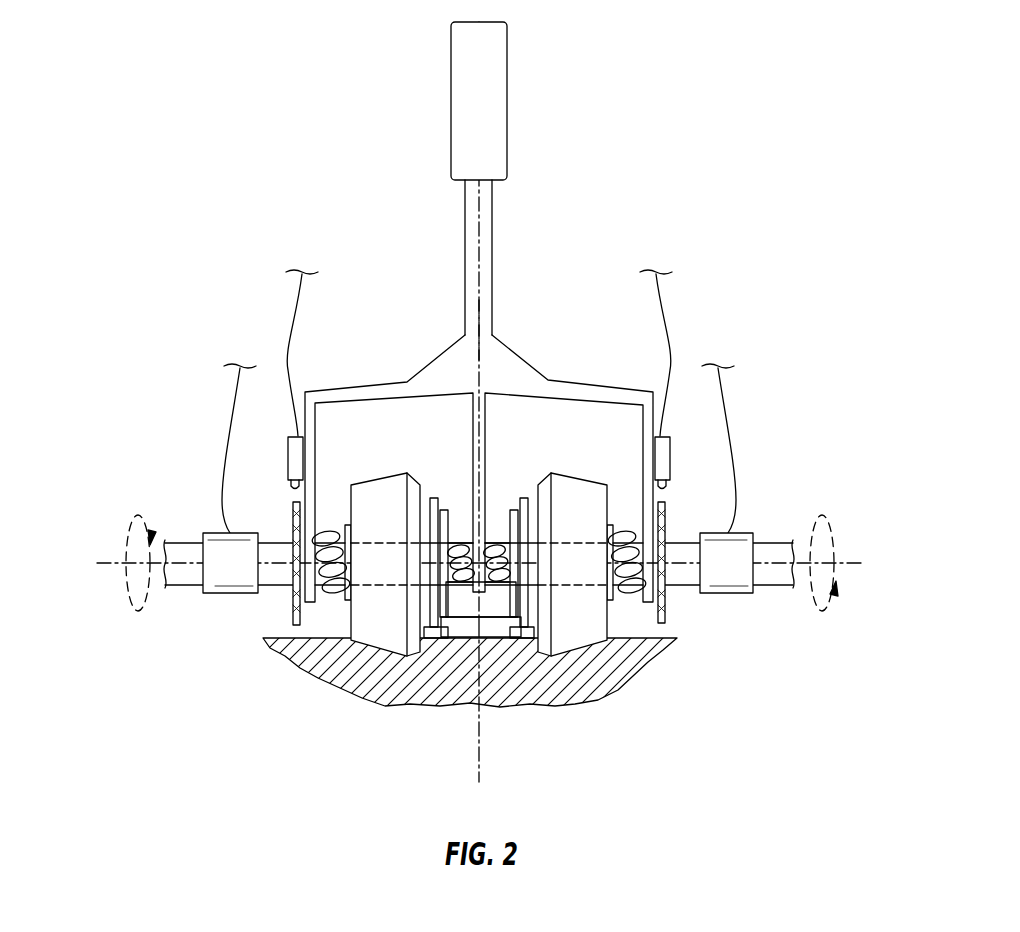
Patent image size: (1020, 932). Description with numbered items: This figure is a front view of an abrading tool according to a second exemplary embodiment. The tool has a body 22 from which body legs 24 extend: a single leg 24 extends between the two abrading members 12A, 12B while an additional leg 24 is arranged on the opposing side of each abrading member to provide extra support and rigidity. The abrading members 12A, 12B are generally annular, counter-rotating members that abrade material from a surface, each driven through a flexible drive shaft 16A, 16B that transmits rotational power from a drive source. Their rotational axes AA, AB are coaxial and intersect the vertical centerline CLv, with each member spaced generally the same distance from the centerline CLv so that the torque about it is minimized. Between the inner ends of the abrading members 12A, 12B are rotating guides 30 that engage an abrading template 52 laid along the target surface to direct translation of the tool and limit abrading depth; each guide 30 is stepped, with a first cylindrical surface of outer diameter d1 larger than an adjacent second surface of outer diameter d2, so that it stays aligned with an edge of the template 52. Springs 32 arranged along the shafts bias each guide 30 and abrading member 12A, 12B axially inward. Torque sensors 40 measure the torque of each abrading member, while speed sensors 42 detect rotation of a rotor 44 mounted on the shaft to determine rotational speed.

The body 22 is at (465, 236).
The vertical centerline CLv is at (479, 332).
The body leg 24 is at (357, 386).
The abrading member 12A is at (382, 482).
The abrading member 12B is at (578, 482).
The guide 30 is at (432, 498).
The spring 32 is at (336, 530).
The torque sensor 40 is at (228, 532).
The speed sensor 42 is at (289, 457).
The rotor 44 is at (293, 603).
The drive shaft 16A is at (183, 543).
The drive shaft 16B is at (778, 543).
The abrading template 52 is at (466, 639).
The outer diameter of first surface d1 is at (439, 505).
The outer diameter of second surface d2 is at (446, 513).
The rotational axis AA is at (122, 562).
The rotational axis AB is at (830, 560).